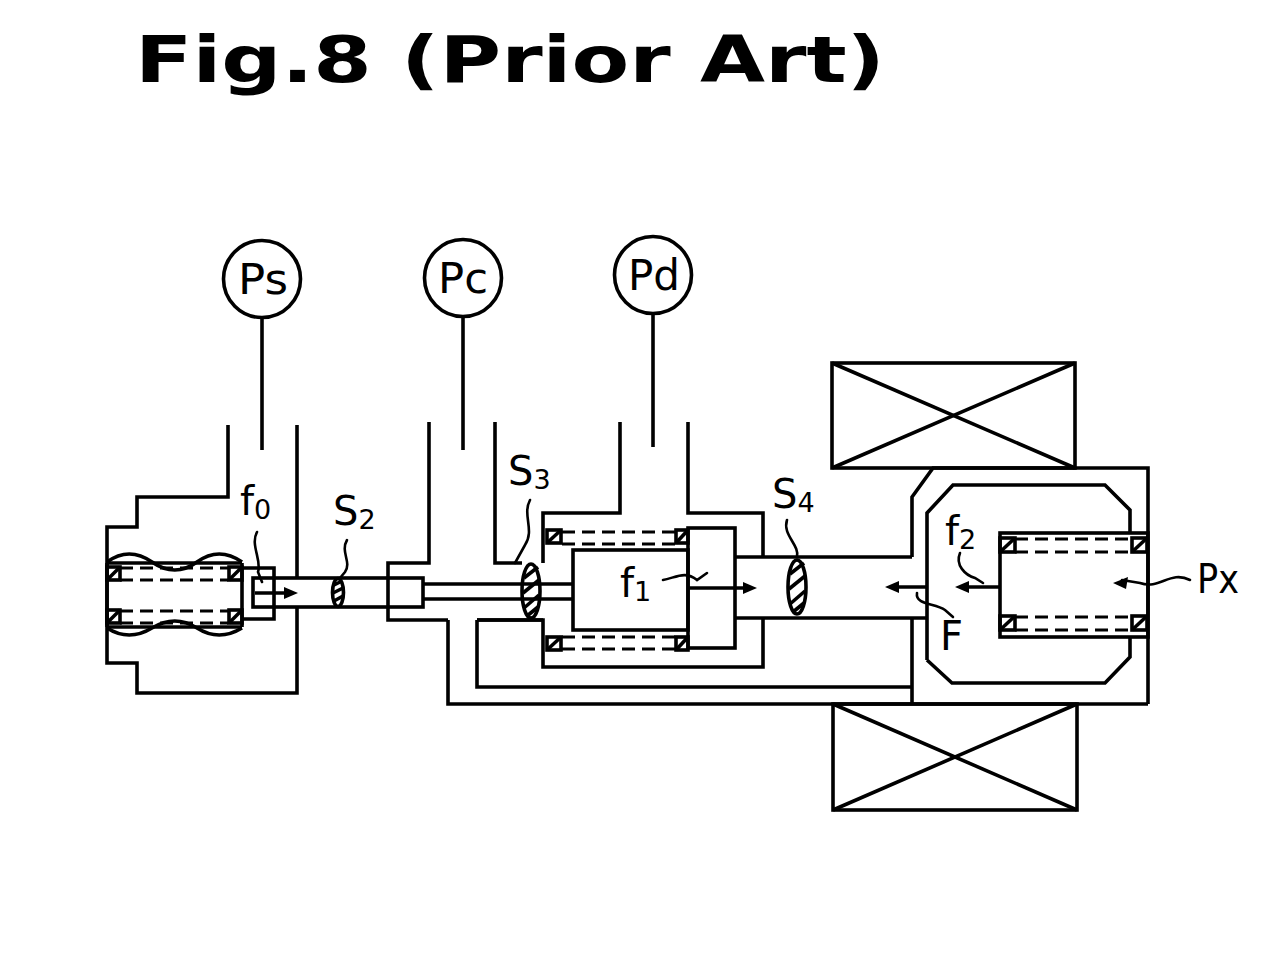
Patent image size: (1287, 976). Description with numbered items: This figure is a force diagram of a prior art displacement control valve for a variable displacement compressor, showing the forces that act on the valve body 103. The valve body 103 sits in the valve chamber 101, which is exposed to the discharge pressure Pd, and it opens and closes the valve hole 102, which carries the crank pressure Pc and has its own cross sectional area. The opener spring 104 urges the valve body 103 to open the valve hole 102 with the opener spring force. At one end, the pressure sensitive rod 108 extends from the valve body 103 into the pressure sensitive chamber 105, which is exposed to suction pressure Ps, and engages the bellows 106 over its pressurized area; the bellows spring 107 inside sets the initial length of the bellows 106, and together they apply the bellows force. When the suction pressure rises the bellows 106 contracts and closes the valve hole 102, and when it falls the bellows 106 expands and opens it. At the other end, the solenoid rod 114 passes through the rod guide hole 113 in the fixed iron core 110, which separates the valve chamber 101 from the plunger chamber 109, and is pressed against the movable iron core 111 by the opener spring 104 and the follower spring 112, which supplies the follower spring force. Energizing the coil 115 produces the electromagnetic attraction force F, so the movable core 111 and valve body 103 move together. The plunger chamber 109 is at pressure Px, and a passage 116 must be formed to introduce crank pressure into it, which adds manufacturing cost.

The valve chamber 101 is at (730, 512).
The valve hole 102 is at (503, 621).
The valve body 103 is at (712, 650).
The opener spring 104 is at (665, 640).
The pressure sensitive chamber 105 is at (155, 677).
The bellows 106 is at (150, 552).
The bellows spring 107 is at (222, 636).
The pressure sensitive rod 108 is at (348, 620).
The plunger chamber 109 is at (1133, 490).
The fixed iron core 110 is at (793, 663).
The movable iron core 111 is at (1123, 674).
The follower spring 112 is at (1148, 632).
The rod guide hole 113 is at (870, 578).
The solenoid rod 114 is at (880, 620).
The coil 115 is at (1075, 412).
The passage 116 is at (507, 702).